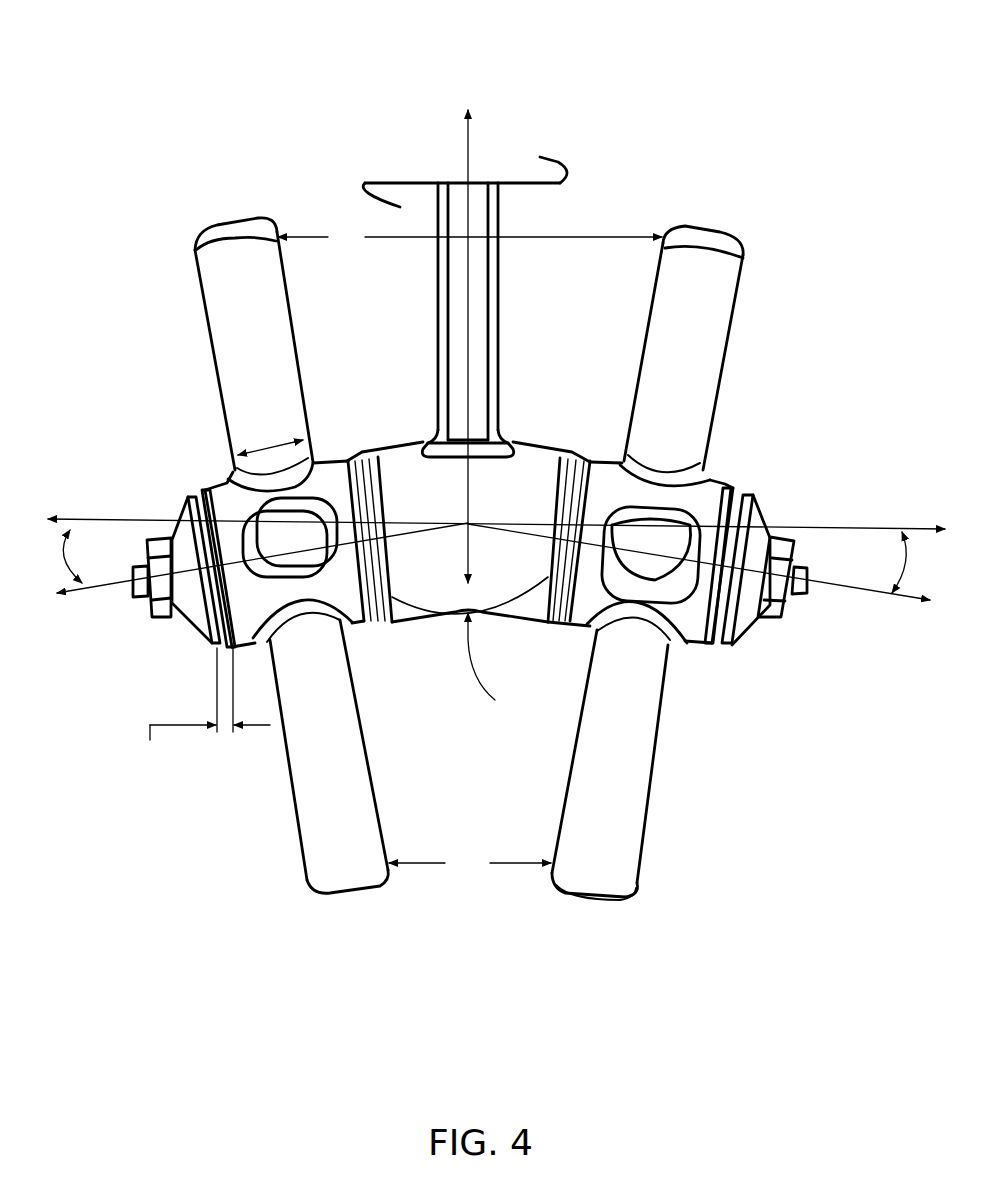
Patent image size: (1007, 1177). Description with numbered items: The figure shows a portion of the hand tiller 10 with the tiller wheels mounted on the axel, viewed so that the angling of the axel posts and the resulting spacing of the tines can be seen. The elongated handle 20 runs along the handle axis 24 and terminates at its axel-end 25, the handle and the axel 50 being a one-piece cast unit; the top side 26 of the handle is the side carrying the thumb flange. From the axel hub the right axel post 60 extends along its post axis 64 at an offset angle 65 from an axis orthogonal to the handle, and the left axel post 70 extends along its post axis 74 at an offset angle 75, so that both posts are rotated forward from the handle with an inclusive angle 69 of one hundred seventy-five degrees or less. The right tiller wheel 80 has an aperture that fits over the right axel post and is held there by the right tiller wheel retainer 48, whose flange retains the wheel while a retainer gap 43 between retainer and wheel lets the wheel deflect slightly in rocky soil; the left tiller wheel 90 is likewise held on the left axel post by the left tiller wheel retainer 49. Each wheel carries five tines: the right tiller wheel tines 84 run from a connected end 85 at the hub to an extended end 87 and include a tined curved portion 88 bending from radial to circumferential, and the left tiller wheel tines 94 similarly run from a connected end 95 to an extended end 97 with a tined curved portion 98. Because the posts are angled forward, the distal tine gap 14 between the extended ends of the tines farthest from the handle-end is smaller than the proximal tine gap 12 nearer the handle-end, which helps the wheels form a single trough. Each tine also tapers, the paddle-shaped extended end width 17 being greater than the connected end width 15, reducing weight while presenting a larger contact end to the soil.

The hand tiller 10 is at (322, 125).
The proximal tine gap 12 is at (470, 236).
The distal tine gap 14 is at (470, 863).
The connected end width 15 is at (268, 443).
The extended end width 17 is at (275, 200).
The handle 20 is at (480, 345).
The handle axis 24 is at (465, 140).
The axel-end 25 is at (505, 440).
The top side 26 is at (490, 305).
The retainer gap 43 is at (203, 706).
The right tiller wheel retainer 48 is at (195, 612).
The left tiller wheel retainer 49 is at (757, 620).
The axel 50 is at (418, 478).
The right axel post 60 is at (178, 530).
The post axis 64 is at (105, 590).
The offset angle 65 is at (63, 557).
The inclusive angle 69 is at (488, 671).
The left axel post 70 is at (783, 565).
The post axis 74 is at (847, 590).
The offset angle 75 is at (905, 562).
The right tiller wheel 80 is at (299, 794).
The right tiller wheel tines 84 is at (318, 770).
The connected end 85 is at (355, 622).
The extended end 87 is at (338, 897).
The tined curved portion 88 is at (335, 853).
The left tiller wheel 90 is at (641, 800).
The left tiller wheel tines 94 is at (620, 770).
The connected end 95 is at (690, 650).
The extended end 97 is at (585, 905).
The tined curved portion 98 is at (625, 808).